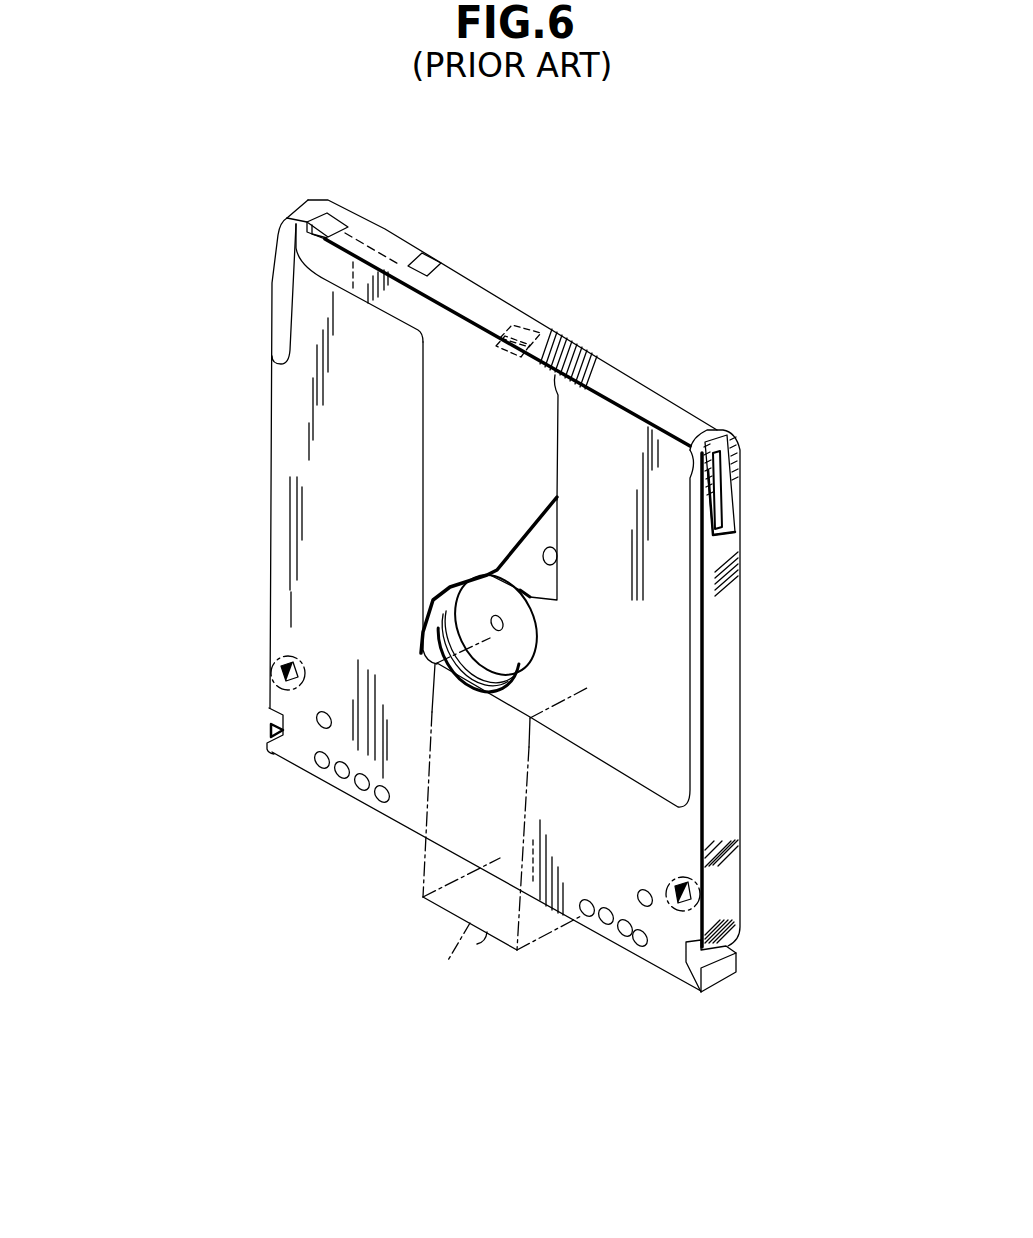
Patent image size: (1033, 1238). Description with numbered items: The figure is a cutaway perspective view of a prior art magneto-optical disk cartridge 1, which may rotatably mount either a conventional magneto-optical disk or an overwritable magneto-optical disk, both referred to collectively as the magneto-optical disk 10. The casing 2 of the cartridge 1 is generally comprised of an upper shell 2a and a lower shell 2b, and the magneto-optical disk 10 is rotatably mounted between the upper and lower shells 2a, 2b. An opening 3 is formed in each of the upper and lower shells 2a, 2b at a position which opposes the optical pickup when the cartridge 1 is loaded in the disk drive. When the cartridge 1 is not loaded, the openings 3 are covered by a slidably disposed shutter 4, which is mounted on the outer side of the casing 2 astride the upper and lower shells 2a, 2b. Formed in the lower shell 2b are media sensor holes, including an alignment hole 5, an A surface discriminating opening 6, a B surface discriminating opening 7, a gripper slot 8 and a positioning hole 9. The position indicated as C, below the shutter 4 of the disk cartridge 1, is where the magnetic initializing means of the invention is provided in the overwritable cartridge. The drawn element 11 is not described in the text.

The disk cartridge 1 is at (538, 970).
The casing 2 is at (251, 575).
The upper shell 2a is at (741, 623).
The lower shell 2b is at (275, 634).
The opening 3 is at (560, 566).
The shutter 4 is at (540, 440).
The alignment hole 5 is at (289, 680).
The A surface discriminating opening 6 is at (340, 798).
The B surface discriminating opening 7 is at (603, 945).
The gripper slot 8 is at (723, 955).
The positioning hole 9 is at (690, 880).
The magneto-optical disk 10 is at (510, 545).
The reel hub 11 is at (522, 640).
The position below the shutter C is at (447, 962).